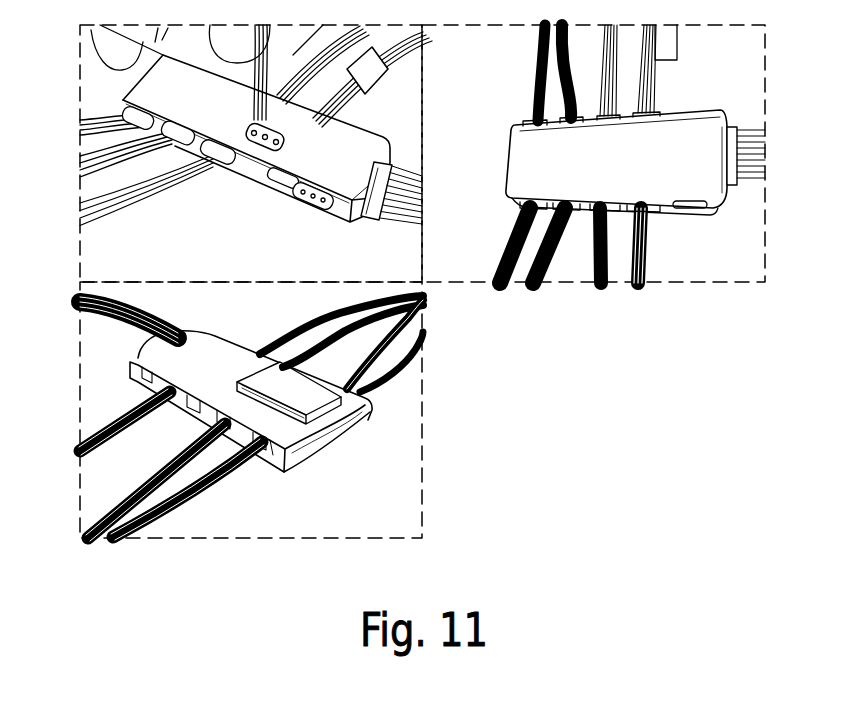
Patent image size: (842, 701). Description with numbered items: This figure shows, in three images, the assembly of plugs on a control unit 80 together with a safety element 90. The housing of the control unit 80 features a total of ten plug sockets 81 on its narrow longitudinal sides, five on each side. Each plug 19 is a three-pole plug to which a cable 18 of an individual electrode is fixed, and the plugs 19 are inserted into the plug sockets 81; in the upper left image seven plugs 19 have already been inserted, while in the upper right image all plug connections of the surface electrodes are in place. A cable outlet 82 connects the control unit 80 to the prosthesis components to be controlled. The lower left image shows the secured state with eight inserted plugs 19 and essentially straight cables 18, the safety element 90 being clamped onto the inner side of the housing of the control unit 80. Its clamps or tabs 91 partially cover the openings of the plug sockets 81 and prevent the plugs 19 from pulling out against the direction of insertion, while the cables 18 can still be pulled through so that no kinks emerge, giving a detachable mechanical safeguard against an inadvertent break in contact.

The cables 18 is at (160, 183).
The plugs 19 is at (247, 130).
The control unit 80 is at (341, 148).
The plug sockets 81 is at (319, 207).
The cable outlet 82 is at (392, 220).
The safety element 90 is at (297, 458).
The clamps or tabs 91 is at (274, 453).